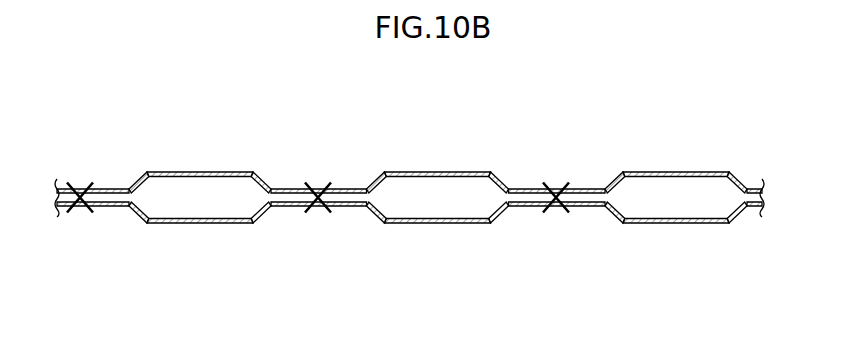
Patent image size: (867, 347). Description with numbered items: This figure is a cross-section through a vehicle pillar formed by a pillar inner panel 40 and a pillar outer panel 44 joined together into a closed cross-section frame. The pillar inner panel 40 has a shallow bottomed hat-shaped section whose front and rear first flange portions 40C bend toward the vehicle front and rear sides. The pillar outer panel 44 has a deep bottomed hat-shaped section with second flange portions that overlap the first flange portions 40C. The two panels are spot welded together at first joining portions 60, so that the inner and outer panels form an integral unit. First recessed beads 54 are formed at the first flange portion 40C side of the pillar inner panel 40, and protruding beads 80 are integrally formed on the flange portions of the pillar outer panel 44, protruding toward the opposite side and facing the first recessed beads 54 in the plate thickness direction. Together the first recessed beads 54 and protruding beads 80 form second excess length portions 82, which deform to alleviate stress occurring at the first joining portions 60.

The pillar inner panel 40 is at (409, 200).
The first flange portions 40C is at (100, 208).
The pillar outer panel 44 is at (157, 167).
The first recessed beads 54 is at (207, 226).
The first joining portions 60 is at (80, 181).
The protruding beads 80 is at (196, 174).
The second excess length portions 82 is at (231, 169).